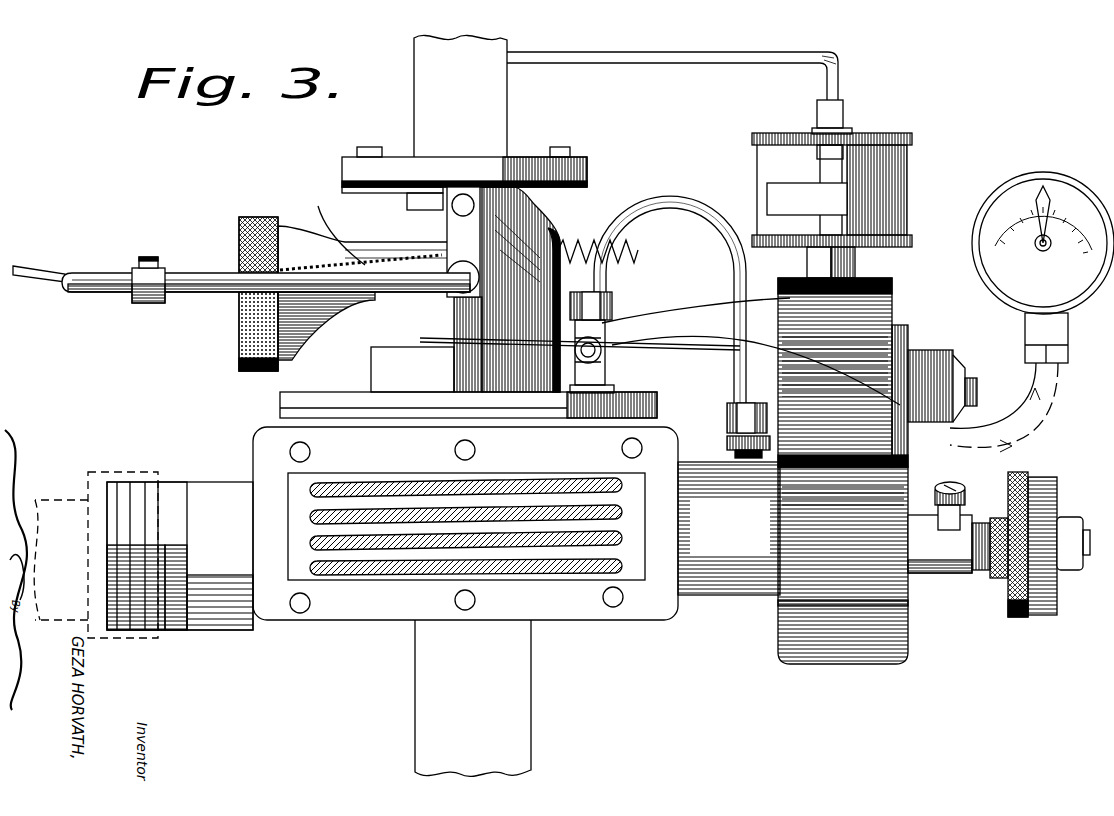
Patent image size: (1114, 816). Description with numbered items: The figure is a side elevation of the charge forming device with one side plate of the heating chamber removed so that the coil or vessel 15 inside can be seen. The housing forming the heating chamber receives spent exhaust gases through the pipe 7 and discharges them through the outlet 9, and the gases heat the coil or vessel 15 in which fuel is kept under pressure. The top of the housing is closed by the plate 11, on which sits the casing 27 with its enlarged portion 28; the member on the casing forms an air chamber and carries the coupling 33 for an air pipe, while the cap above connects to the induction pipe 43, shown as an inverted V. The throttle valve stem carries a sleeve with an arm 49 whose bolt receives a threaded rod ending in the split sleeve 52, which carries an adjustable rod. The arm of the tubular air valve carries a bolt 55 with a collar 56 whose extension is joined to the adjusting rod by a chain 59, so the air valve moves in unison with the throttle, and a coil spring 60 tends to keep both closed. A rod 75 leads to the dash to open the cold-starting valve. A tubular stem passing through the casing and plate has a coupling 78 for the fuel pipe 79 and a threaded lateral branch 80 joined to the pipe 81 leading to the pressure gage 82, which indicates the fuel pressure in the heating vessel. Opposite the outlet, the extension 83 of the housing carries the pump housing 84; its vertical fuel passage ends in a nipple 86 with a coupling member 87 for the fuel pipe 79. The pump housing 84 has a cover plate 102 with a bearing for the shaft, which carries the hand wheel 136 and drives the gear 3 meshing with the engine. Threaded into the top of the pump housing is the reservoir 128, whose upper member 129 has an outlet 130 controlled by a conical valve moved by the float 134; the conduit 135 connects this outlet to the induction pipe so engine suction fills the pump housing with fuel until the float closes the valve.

The gear 3 is at (1058, 497).
The pipe 7 is at (473, 698).
The outlet 9 is at (143, 555).
The plate 11 is at (450, 513).
The coil or vessel 15 is at (545, 478).
The casing 27 is at (284, 396).
The enlarged portion 28 is at (412, 369).
The coupling 33 is at (250, 218).
The intake manifold or induction pipe 43 is at (460, 96).
The arm 49 is at (455, 225).
The split sleeve 52 is at (150, 303).
The bolt 55 is at (545, 238).
The collar 56 is at (387, 309).
The chain 59 is at (361, 225).
The coil spring 60 is at (565, 252).
The rod 75 is at (35, 268).
The coupling 78 is at (619, 330).
The fuel pipe 79 is at (680, 213).
The threaded lateral branch 80 is at (604, 356).
The pipe 81 is at (1060, 388).
The pressure gage 82 is at (985, 255).
The extension 83 is at (729, 528).
The pump housing 84 is at (850, 471).
The nipple 86 is at (727, 444).
The coupling member 87 is at (727, 415).
The cover plate 102 is at (910, 628).
The reservoir 128 is at (912, 240).
The upper member 129 is at (869, 179).
The outlet 130 is at (845, 112).
The float 134 is at (868, 192).
The conduit 135 is at (655, 48).
The hand wheel 136 is at (1020, 472).